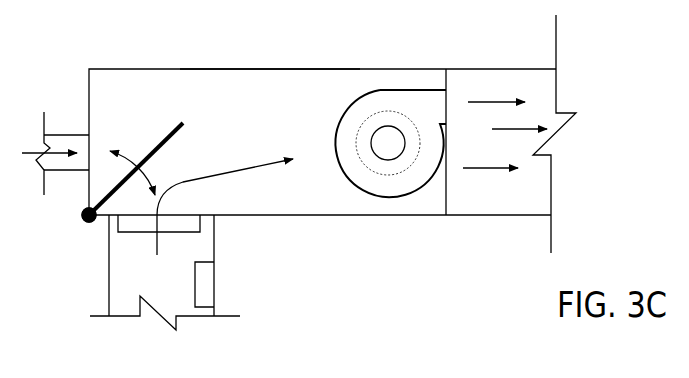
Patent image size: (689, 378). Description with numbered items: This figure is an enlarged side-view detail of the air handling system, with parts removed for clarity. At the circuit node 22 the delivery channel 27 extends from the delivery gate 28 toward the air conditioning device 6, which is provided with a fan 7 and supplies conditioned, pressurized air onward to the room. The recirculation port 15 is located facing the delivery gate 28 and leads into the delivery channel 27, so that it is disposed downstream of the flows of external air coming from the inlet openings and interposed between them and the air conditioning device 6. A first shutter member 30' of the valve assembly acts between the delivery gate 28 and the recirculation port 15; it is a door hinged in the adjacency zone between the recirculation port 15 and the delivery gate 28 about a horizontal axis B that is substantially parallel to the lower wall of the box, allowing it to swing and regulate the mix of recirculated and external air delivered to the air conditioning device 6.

The circuit node 22 is at (126, 92).
The delivery gate 28 is at (200, 77).
The delivery channel 27 is at (329, 77).
The fan 7 is at (407, 100).
The air conditioning device 6 is at (516, 80).
The first shutter member 30' is at (166, 172).
The recirculation port 15 is at (210, 248).
The horizontal axis B is at (83, 223).